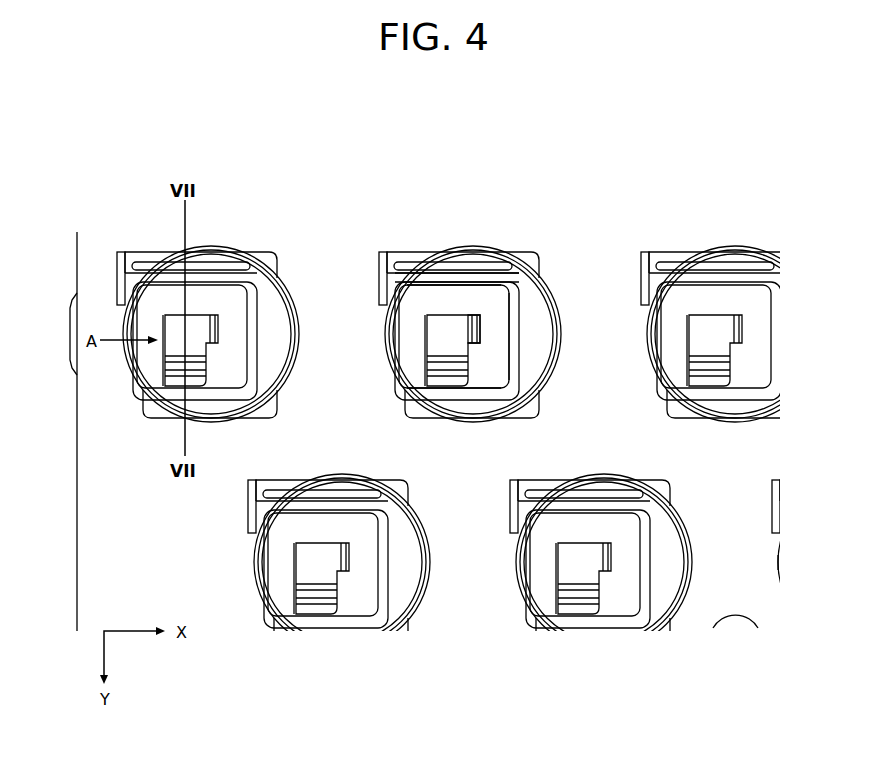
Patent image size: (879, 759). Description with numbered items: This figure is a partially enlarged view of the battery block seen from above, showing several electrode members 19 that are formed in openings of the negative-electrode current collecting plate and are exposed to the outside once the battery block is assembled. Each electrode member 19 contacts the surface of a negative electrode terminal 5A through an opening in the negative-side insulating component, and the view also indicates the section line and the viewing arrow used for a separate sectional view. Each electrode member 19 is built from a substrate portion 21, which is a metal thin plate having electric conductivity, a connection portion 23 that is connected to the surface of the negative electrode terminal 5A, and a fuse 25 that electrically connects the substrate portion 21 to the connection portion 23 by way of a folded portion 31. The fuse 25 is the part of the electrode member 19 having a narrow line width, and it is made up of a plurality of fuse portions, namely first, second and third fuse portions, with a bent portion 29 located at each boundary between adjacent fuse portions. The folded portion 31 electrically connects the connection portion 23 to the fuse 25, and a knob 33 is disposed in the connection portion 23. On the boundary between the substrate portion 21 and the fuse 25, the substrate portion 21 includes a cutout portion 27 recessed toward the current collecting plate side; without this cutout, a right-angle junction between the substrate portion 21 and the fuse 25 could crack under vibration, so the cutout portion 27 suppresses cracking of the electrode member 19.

The electrode member 19 is at (470, 294).
The substrate portion 21 is at (459, 335).
The connection portion 23 is at (452, 350).
The fuse 25 is at (454, 336).
The cutout portion 27 is at (398, 265).
The bent portion 29 is at (473, 334).
The folded portion 31 is at (447, 366).
The knob 33 is at (474, 329).
The negative electrode terminal 5A is at (457, 341).